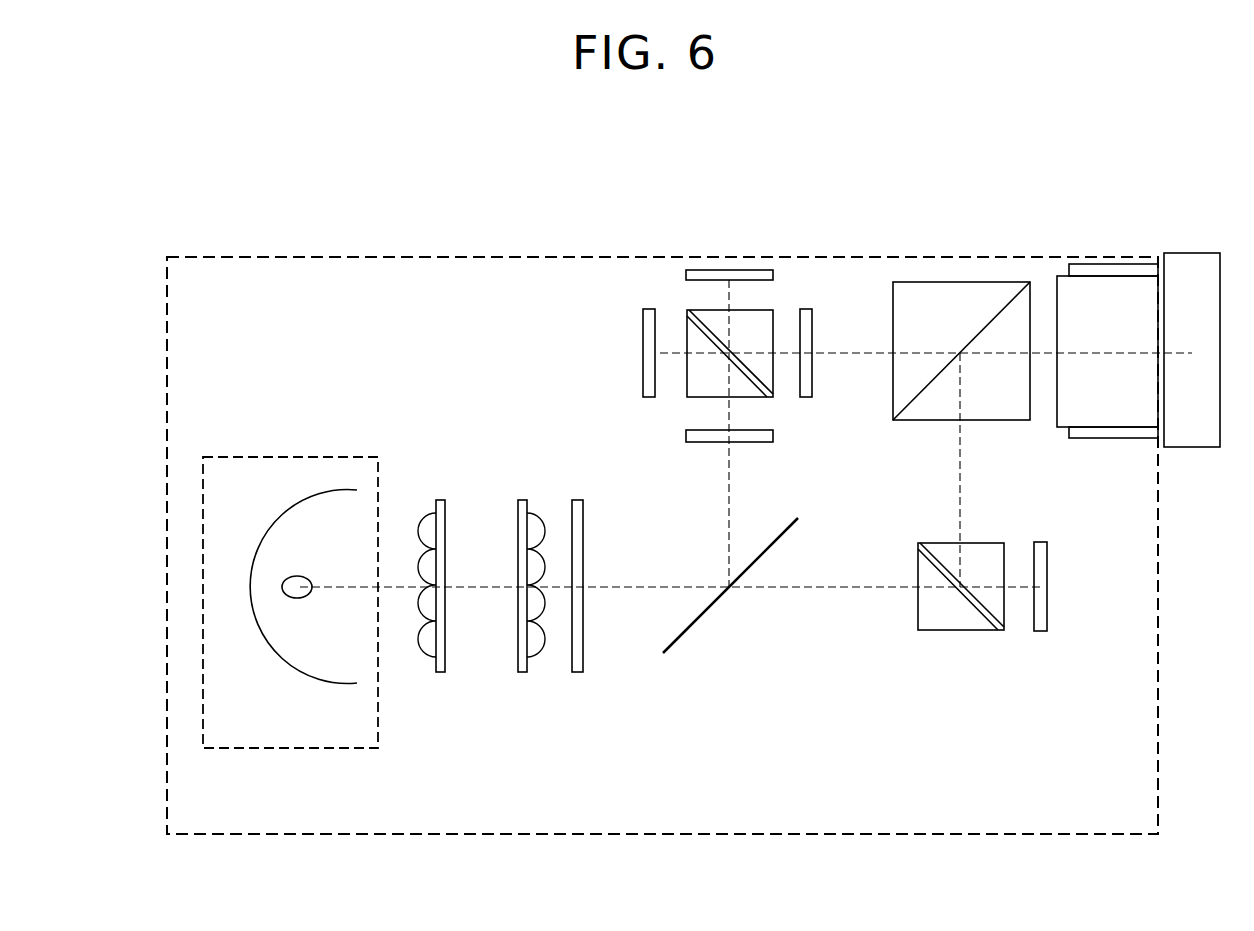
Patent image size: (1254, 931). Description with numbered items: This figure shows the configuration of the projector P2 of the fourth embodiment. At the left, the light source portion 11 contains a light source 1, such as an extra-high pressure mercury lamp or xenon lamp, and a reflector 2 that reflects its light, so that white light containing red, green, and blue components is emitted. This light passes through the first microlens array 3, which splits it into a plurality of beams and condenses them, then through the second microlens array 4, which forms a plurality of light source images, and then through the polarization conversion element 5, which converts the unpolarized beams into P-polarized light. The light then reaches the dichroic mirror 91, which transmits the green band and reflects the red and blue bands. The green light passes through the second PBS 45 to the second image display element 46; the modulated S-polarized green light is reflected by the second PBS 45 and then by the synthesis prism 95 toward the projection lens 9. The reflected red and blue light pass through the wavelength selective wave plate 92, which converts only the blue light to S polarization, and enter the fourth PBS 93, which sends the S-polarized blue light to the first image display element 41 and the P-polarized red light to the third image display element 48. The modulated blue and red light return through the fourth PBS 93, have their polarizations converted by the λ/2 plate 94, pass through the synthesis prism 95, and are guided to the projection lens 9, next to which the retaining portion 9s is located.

The projector P2 is at (360, 257).
The light source 1 is at (292, 598).
The reflector 2 is at (305, 672).
The first microlens array 3 is at (436, 505).
The second microlens array 4 is at (518, 505).
The polarization conversion element 5 is at (572, 505).
The light source portion 11 is at (378, 723).
The first image display element 41 is at (645, 353).
The second PBS 45 is at (930, 600).
The second image display element 46 is at (1050, 570).
The third image display element 48 is at (722, 272).
The projection lens 9 is at (1097, 305).
The retaining portion 9s is at (1148, 265).
The dichroic mirror 91 is at (697, 623).
The wavelength selective wave plate 92 is at (758, 442).
The fourth PBS 93 is at (760, 330).
The λ/2 plate 94 is at (812, 333).
The synthesis prism 95 is at (935, 305).